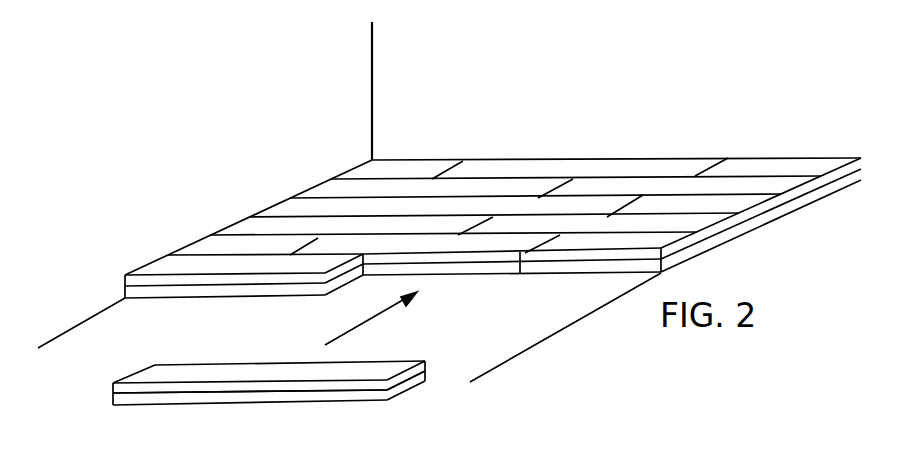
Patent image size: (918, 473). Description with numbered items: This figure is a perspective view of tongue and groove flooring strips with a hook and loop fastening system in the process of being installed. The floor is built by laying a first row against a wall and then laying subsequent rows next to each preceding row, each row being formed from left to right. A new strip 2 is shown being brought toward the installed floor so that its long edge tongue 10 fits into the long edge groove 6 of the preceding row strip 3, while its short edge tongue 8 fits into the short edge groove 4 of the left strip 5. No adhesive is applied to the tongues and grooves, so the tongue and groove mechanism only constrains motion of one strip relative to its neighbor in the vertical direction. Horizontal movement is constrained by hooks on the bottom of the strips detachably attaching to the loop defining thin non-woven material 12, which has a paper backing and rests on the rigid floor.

The new strip 2 is at (266, 417).
The preceding row strip 3 is at (502, 243).
The short edge groove 4 is at (407, 383).
The left strip 5 is at (229, 239).
The long edge groove 6 is at (223, 393).
The short edge tongue 8 is at (133, 373).
The long edge tongue 10 is at (127, 275).
The loop defining thin non-woven material 12 is at (107, 340).